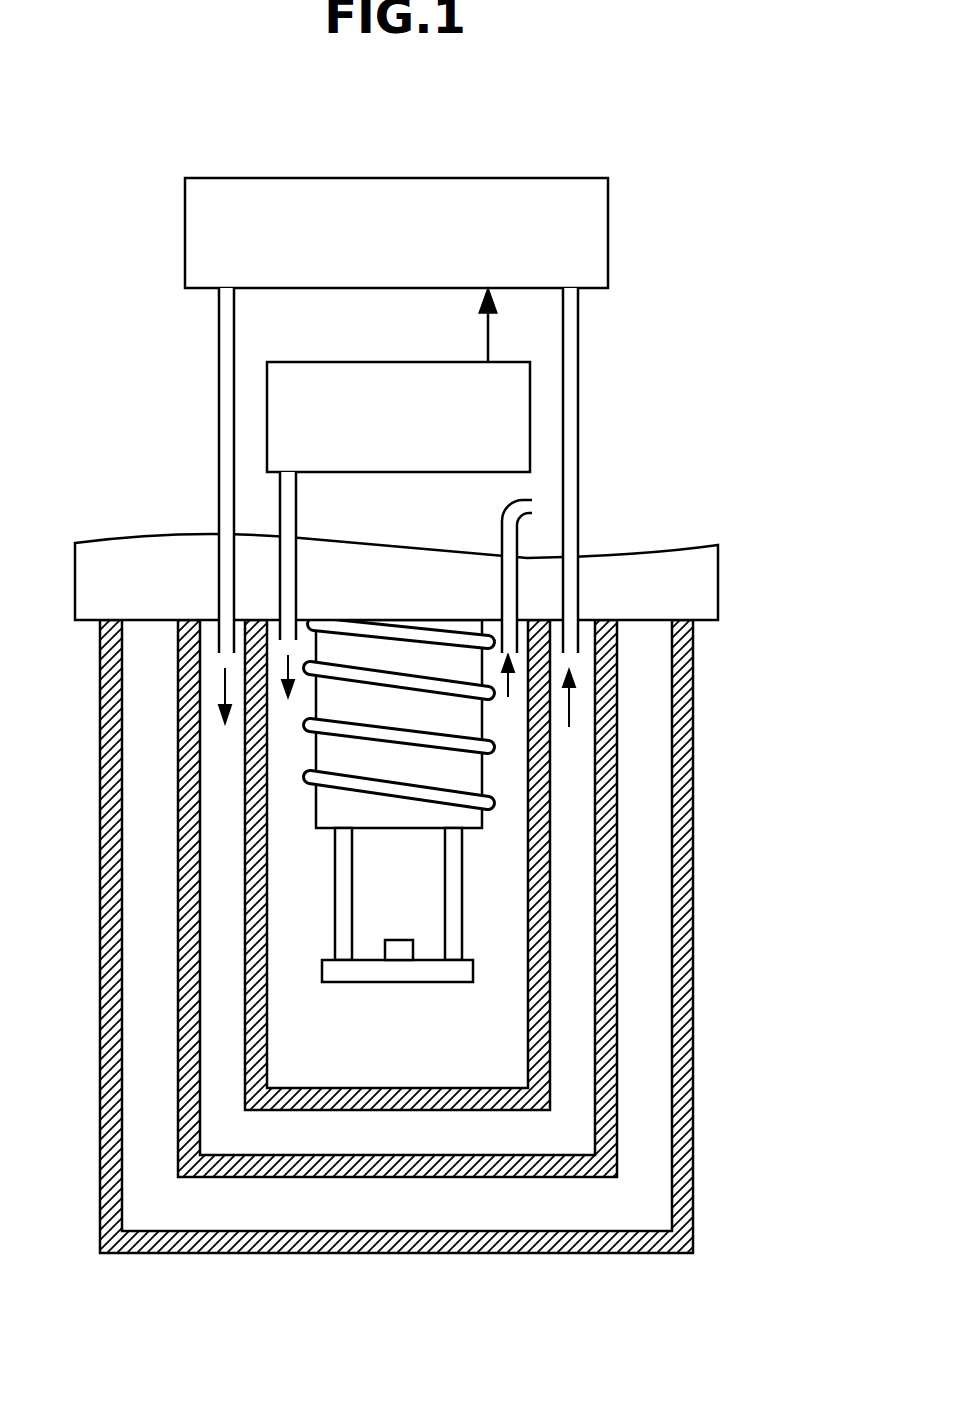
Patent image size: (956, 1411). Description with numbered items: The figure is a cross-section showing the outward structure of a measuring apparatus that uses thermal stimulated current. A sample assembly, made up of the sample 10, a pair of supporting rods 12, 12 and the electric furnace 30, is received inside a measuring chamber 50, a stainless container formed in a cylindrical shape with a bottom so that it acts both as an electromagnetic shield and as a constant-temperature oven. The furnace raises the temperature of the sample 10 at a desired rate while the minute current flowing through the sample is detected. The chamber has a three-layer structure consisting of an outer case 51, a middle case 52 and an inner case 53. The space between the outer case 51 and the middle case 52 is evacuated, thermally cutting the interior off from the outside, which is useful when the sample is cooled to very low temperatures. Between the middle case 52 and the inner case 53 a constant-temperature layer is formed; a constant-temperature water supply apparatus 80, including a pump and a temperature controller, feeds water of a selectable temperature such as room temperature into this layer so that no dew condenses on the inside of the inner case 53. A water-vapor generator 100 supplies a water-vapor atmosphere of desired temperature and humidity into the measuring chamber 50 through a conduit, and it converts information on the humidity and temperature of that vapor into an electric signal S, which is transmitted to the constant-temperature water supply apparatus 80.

The constant-temperature water supply apparatus 80 is at (508, 178).
The water-vapor generator 100 is at (357, 362).
The electric signal S is at (494, 329).
The electric furnace 30 is at (395, 829).
The supporting rods 12 is at (336, 912).
The sample 10 is at (397, 956).
The measuring chamber 50 is at (396, 930).
The inner case 53 is at (392, 1100).
The middle case 52 is at (463, 1168).
The outer case 51 is at (532, 1240).